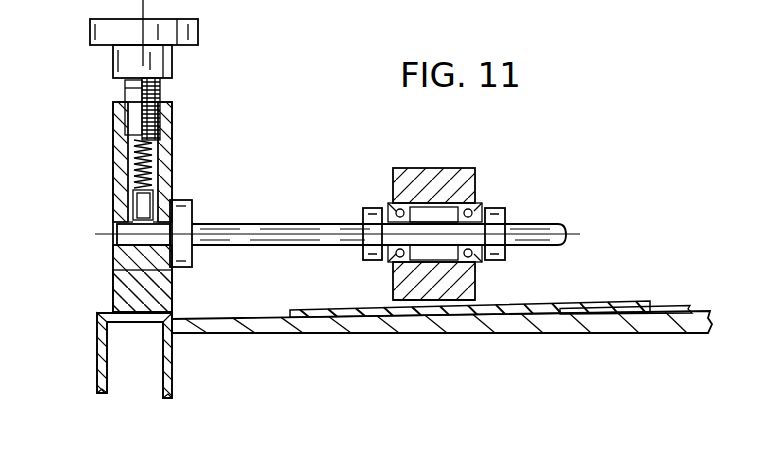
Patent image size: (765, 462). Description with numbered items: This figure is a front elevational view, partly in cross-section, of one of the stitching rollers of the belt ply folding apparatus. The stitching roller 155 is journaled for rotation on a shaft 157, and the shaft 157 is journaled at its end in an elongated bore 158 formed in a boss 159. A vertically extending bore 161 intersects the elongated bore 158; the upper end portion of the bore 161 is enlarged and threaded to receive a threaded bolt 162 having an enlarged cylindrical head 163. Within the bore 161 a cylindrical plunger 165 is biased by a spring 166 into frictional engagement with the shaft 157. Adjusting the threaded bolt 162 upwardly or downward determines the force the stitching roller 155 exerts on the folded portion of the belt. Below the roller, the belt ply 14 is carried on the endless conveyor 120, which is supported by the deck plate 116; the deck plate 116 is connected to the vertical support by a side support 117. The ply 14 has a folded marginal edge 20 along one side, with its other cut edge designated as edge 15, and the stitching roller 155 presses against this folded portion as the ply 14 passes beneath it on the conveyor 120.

The ply 14 is at (594, 300).
The cut edge of belt 15 is at (652, 305).
The folded marginal edge 20 is at (410, 301).
The deck plate 116 is at (474, 322).
The side support 117 is at (170, 378).
The endless conveyor 120 is at (594, 325).
The stitching roller 155 is at (445, 168).
The shaft 157 is at (548, 228).
The elongated bore 158 is at (125, 243).
The boss 159 is at (125, 292).
The vertically extending bore 161 is at (162, 166).
The threaded bolt 162 is at (160, 100).
The enlarged cylindrical head 163 is at (198, 32).
The cylindrical plunger 165 is at (133, 200).
The spring 166 is at (132, 148).